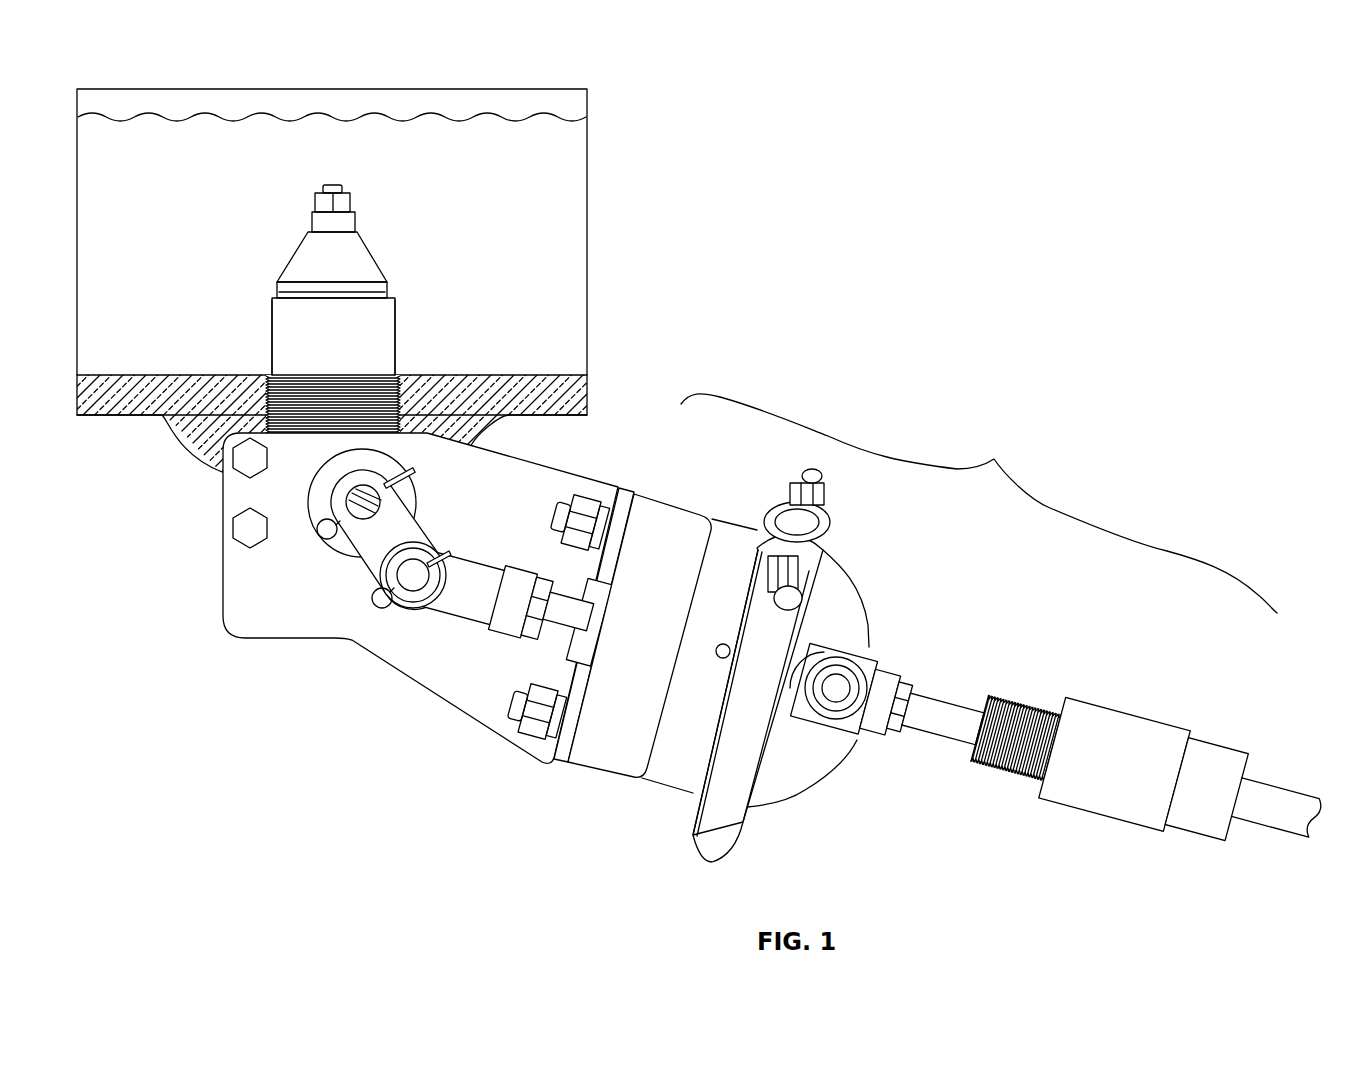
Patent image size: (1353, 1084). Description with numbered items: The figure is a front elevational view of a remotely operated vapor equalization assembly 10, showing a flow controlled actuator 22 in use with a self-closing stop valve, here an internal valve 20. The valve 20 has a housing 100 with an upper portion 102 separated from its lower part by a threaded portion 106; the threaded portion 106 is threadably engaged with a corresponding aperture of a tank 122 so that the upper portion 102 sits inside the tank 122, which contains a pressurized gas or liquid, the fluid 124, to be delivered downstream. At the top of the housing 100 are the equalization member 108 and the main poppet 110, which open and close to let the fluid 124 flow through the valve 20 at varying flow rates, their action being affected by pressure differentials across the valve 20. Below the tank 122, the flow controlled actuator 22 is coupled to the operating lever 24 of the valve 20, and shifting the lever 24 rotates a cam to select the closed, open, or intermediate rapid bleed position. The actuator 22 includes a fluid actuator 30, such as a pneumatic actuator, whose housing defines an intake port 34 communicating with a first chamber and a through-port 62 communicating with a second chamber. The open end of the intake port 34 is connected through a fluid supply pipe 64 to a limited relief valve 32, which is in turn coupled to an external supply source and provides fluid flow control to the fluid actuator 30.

The remotely operated vapor equalization assembly 10 is at (896, 225).
The internal valve 20 is at (448, 276).
The flow controlled actuator 22 is at (979, 503).
The operating lever 24 is at (378, 538).
The fluid actuator 30 is at (669, 790).
The limited relief valve 32 is at (1112, 707).
The intake port 34 is at (880, 663).
The through-port 62 is at (718, 654).
The fluid supply pipe 64 is at (950, 697).
The housing 100 is at (378, 357).
The upper portion 102 is at (270, 337).
The threaded portion 106 is at (326, 384).
The equalization member 108 is at (347, 204).
The main poppet 110 is at (362, 255).
The tank 122 is at (588, 232).
The fluid 124 is at (493, 124).